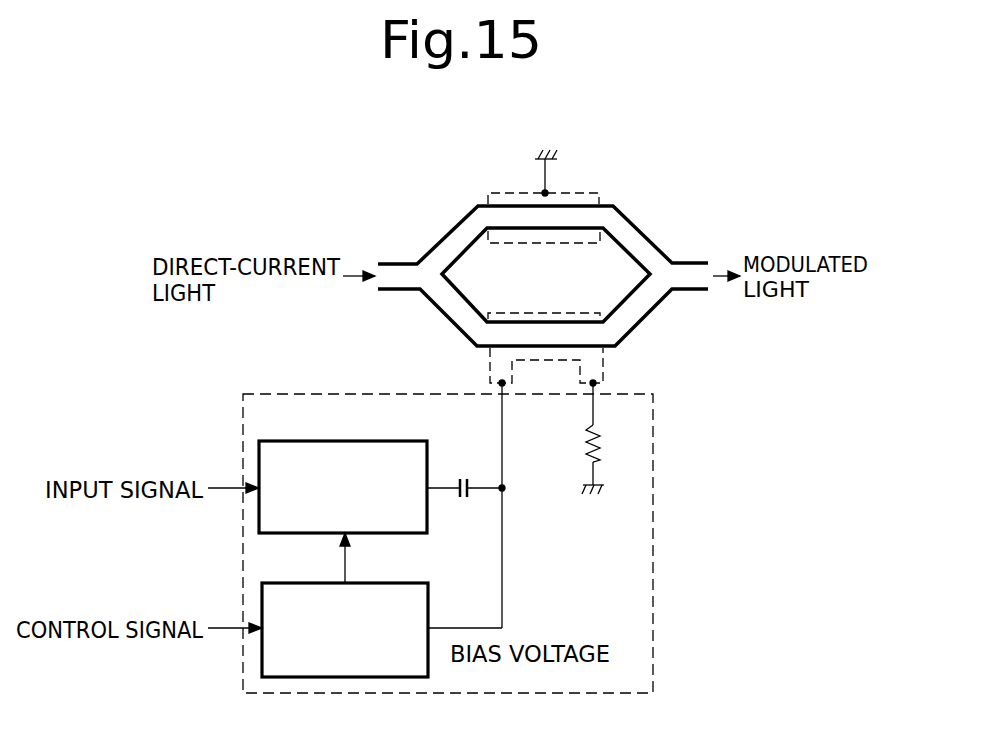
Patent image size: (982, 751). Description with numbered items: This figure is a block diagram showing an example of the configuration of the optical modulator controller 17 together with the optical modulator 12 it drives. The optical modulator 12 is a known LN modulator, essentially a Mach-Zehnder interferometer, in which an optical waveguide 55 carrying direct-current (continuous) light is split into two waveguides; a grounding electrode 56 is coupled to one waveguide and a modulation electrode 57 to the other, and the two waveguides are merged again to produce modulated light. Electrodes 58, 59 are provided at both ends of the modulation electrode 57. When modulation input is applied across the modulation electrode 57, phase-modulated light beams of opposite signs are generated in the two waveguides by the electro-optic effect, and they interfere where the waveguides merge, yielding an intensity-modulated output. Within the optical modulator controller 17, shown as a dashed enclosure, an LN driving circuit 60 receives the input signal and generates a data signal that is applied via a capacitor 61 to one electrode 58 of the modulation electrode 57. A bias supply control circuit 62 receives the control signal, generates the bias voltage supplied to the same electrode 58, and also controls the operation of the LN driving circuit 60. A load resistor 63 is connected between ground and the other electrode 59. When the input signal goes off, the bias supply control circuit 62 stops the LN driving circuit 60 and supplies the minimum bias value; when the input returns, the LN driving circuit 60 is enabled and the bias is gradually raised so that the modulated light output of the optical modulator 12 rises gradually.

The optical modulator 12 is at (612, 188).
The optical waveguide 55 is at (408, 262).
The grounding electrode 56 is at (490, 197).
The modulation electrode 57 is at (514, 313).
The electrode 58 is at (489, 352).
The electrode 59 is at (603, 383).
The LN driving circuit 60 is at (372, 441).
The capacitor 61 is at (465, 470).
The bias supply control circuit 62 is at (428, 600).
The load resistor 63 is at (600, 443).
The optical modulator controller 17 is at (655, 543).